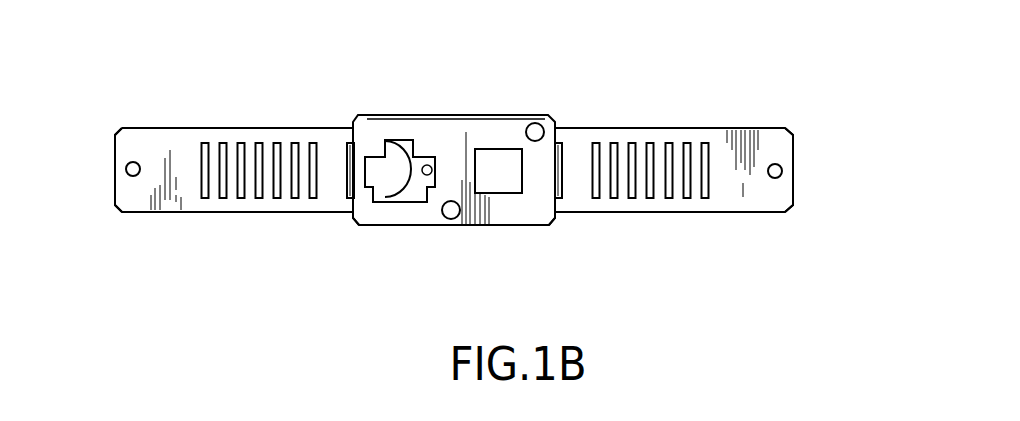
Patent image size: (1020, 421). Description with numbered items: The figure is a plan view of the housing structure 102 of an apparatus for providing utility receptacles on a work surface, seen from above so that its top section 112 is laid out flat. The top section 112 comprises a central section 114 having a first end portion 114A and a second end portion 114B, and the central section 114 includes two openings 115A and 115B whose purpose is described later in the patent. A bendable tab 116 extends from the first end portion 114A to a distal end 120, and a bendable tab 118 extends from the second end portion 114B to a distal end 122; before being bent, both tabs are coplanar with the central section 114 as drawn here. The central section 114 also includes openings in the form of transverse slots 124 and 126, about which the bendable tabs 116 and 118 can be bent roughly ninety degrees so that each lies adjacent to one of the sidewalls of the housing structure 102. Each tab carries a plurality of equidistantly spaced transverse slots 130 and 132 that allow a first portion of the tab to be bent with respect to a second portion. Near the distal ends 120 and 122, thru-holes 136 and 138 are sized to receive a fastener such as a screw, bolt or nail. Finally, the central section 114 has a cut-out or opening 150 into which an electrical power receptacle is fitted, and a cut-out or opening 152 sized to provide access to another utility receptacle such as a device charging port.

The housing structure 102 is at (260, 213).
The top section 112 is at (527, 113).
The central section 114 is at (477, 224).
The first end portion 114A is at (562, 200).
The second end portion 114B is at (350, 132).
The opening 115A is at (539, 121).
The opening 115B is at (452, 219).
The bendable tab 116 is at (703, 128).
The bendable tab 118 is at (180, 128).
The distal end 120 is at (795, 163).
The distal end 122 is at (115, 167).
The transverse slot 124 is at (560, 191).
The transverse slot 126 is at (348, 192).
The transverse slots 130 is at (649, 142).
The transverse slots 132 is at (223, 142).
The thru-hole 136 is at (780, 172).
The thru-hole 138 is at (133, 162).
The opening 150 is at (407, 203).
The opening 152 is at (505, 178).